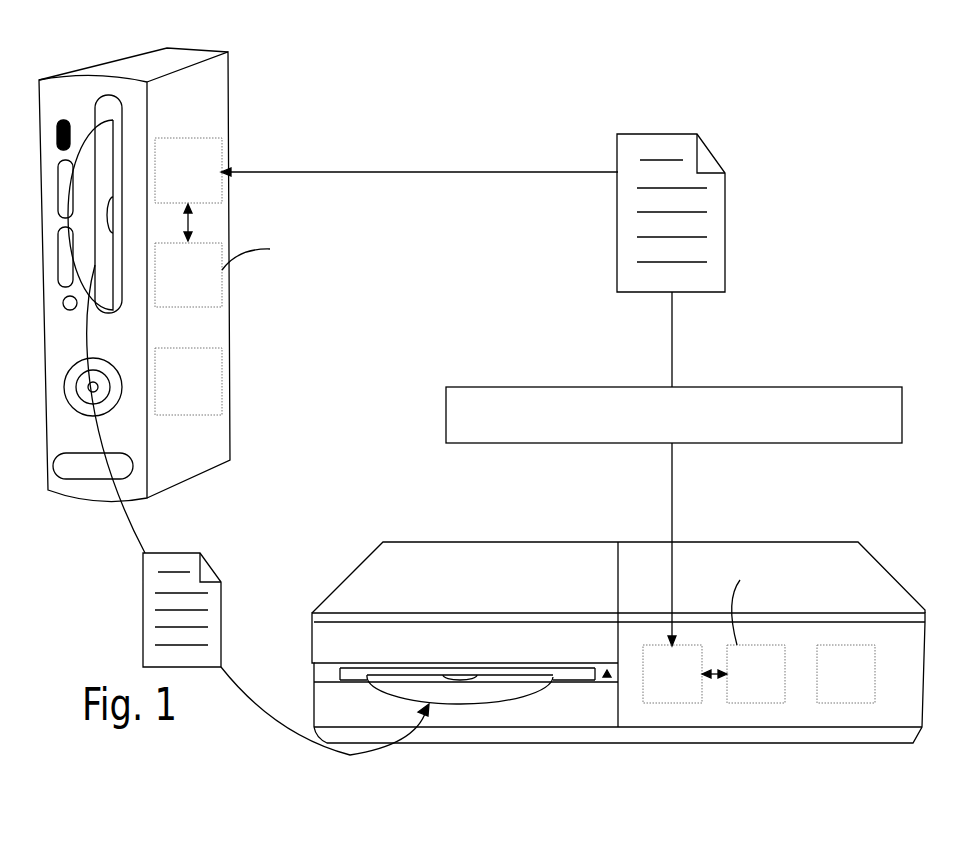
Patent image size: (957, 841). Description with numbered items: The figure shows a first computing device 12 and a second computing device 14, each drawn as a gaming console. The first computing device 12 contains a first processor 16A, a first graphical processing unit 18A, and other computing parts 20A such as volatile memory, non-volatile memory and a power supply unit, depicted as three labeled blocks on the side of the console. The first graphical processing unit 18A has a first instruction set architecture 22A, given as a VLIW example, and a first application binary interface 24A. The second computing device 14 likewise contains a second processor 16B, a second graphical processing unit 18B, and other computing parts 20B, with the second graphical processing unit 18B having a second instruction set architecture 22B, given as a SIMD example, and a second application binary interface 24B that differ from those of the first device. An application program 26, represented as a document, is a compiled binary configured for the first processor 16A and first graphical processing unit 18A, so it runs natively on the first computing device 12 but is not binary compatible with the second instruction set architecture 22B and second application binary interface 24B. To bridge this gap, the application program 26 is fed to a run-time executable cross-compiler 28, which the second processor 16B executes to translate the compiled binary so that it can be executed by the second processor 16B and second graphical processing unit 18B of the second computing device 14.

The first computing device 12 is at (198, 50).
The second computing device 14 is at (462, 542).
The first processor 16A is at (188, 170).
The first graphical processing unit 18A is at (188, 275).
The other computing parts 20A is at (188, 381).
The first instruction set architecture 22A is at (222, 270).
The first application binary interface 24A is at (329, 265).
The application program 26 is at (675, 133).
The run-time executable cross-compiler 28 is at (674, 415).
The second processor 16B is at (672, 674).
The second graphical processing unit 18B is at (756, 674).
The other computing parts 20B is at (846, 674).
The second instruction set architecture 22B is at (737, 645).
The second application binary interface 24B is at (804, 609).